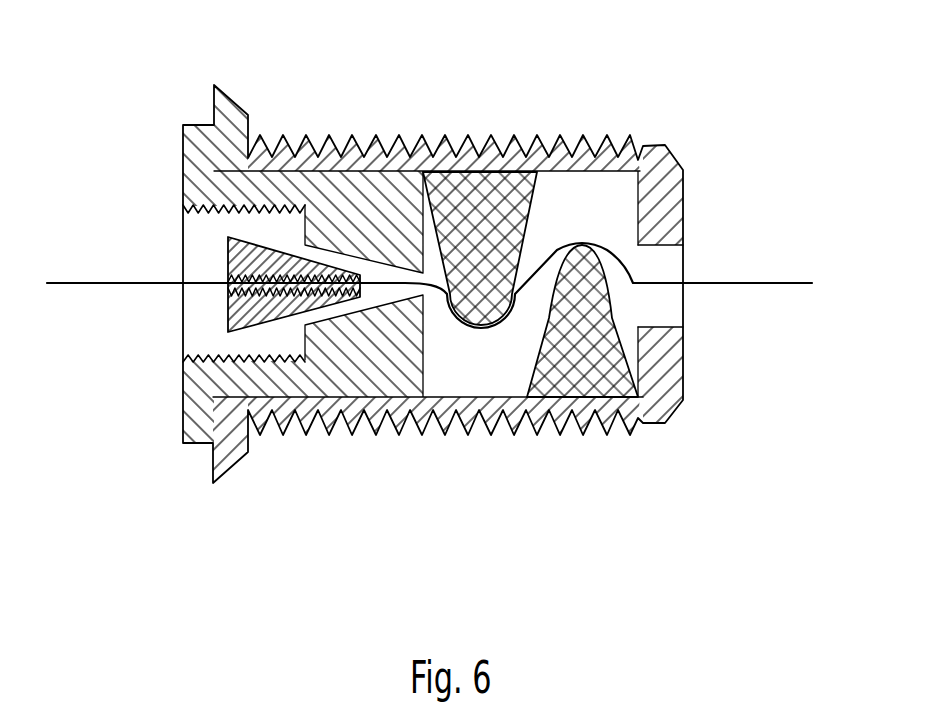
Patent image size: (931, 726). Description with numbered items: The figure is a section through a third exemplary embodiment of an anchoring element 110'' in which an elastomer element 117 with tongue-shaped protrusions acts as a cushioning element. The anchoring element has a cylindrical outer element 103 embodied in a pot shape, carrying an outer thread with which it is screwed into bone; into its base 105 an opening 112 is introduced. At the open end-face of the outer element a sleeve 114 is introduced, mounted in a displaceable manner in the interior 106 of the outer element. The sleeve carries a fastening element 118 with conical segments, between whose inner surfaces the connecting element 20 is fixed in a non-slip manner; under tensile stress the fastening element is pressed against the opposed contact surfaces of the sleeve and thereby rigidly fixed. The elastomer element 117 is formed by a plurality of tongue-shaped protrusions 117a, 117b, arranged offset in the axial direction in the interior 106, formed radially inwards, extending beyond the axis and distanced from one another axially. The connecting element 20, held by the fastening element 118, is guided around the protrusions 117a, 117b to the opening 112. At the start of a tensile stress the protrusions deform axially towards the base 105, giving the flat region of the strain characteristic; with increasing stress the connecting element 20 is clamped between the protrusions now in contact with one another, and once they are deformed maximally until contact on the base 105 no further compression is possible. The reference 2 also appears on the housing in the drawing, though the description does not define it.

The anchoring element 110'' is at (429, 258).
The housing 2 is at (614, 148).
The interior 106 is at (378, 170).
The cylindrical outer element 103 is at (490, 407).
The sleeve 114 is at (318, 377).
The base 105 is at (672, 352).
The opening 112 is at (672, 310).
The fastening element 118 is at (227, 305).
The elastomer element 117 is at (530, 286).
The tongue-shaped protrusion 117a is at (513, 183).
The tongue-shaped protrusion 117b is at (585, 377).
The connecting element 20 is at (785, 283).